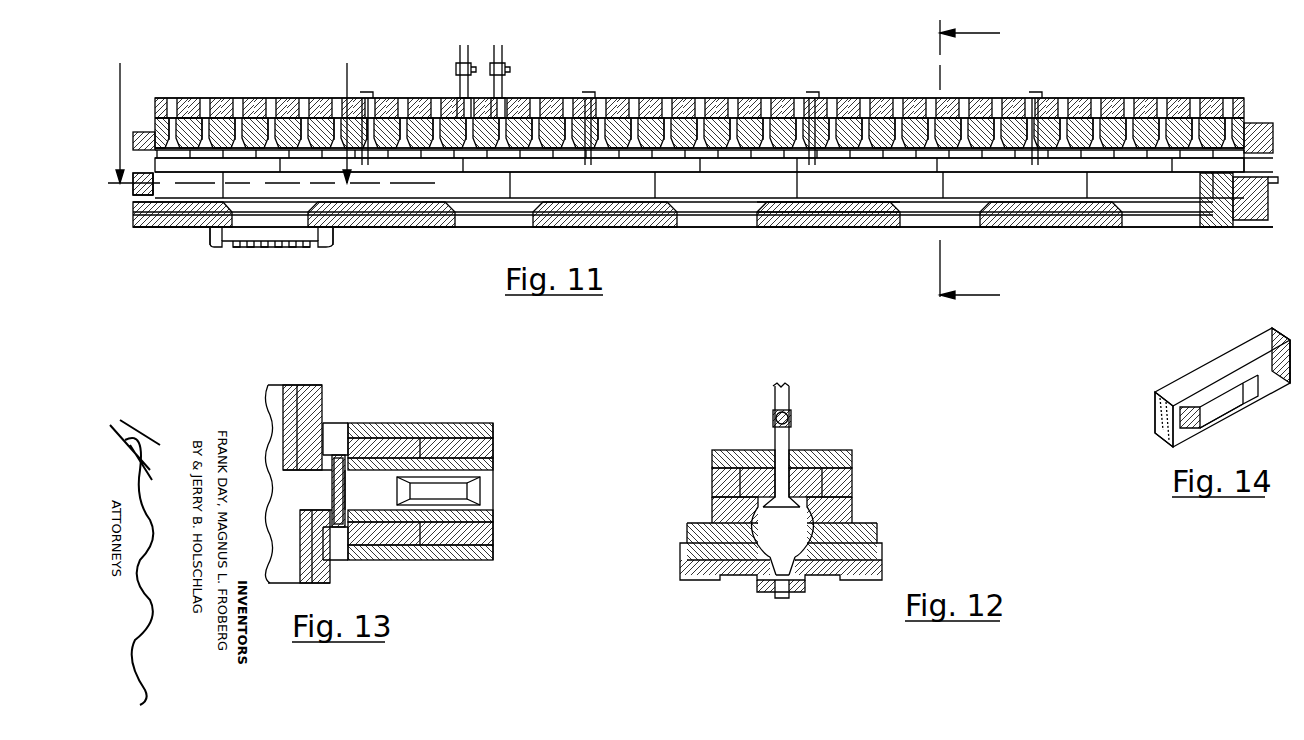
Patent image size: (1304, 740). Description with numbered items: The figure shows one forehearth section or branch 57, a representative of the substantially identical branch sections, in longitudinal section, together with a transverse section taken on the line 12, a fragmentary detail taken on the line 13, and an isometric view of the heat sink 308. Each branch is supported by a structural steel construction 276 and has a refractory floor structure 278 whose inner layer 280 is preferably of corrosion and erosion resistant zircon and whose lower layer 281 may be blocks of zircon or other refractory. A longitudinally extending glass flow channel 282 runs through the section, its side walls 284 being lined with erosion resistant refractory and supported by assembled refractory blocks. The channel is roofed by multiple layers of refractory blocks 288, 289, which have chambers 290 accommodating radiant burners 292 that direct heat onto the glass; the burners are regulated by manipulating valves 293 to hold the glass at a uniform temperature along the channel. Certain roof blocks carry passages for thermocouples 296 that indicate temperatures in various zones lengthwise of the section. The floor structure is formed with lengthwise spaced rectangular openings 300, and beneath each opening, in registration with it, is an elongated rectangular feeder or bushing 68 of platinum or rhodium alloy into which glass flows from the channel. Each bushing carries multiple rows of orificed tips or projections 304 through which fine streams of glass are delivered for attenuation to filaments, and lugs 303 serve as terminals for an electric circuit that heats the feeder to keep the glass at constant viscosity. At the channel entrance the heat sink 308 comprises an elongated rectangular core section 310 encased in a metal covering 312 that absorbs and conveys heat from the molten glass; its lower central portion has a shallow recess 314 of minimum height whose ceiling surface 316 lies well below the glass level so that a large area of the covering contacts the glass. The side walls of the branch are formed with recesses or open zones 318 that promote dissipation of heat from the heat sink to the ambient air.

In FIG. 11, the forehearth section or branch 57 is at (1152, 90).
In FIG. 11, the feeder or bushing 68 is at (270, 242).
In FIG. 12, the feeder or bushing 68 is at (777, 594).
In FIG. 12, the structural steel construction 276 is at (877, 548).
In FIG. 11, the floor structure 278 is at (814, 233).
In FIG. 11, the inner layer 280 is at (790, 198).
In FIG. 11, the lower layer 281 is at (797, 220).
In FIG. 11, the glass flow channel 282 is at (634, 192).
In FIG. 12, the side walls 284 is at (812, 505).
In FIG. 11, the refractory blocks 288 is at (705, 127).
In FIG. 12, the refractory blocks 288 is at (752, 475).
In FIG. 11, the refractory blocks 289 is at (830, 100).
In FIG. 12, the refractory blocks 289 is at (752, 450).
In FIG. 11, the chambers 290 is at (618, 108).
In FIG. 11, the radiant burners 292 is at (462, 122).
In FIG. 12, the radiant burners 292 is at (777, 492).
In FIG. 11, the valves 293 is at (478, 68).
In FIG. 12, the valves 293 is at (790, 415).
In FIG. 11, the thermocouples 296 is at (812, 92).
In FIG. 11, the openings or passages 300 is at (493, 223).
In FIG. 13, the openings or passages 300 is at (440, 492).
In FIG. 11, the lugs 303 is at (233, 247).
In FIG. 11, the tips or projections 304 is at (298, 248).
In FIG. 11, the heat sink 308 is at (158, 192).
In FIG. 13, the heat sink 308 is at (355, 487).
In FIG. 14, the heat sink 308 is at (1198, 362).
In FIG. 11, the core section 310 is at (135, 185).
In FIG. 13, the core section 310 is at (332, 483).
In FIG. 11, the metal covering 312 is at (140, 180).
In FIG. 13, the metal covering 312 is at (334, 495).
In FIG. 14, the metal covering 312 is at (1163, 410).
In FIG. 11, the recess 314 is at (143, 195).
In FIG. 14, the recess 314 is at (1262, 402).
In FIG. 14, the surface 316 is at (1215, 395).
In FIG. 13, the recesses or open zones 318 is at (340, 430).
In FIG. 11, the section line 12— 12 is at (973, 154).
In FIG. 11, the section line 13— 13 is at (271, 111).